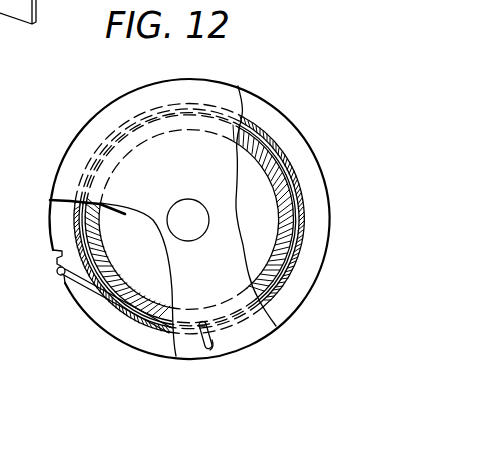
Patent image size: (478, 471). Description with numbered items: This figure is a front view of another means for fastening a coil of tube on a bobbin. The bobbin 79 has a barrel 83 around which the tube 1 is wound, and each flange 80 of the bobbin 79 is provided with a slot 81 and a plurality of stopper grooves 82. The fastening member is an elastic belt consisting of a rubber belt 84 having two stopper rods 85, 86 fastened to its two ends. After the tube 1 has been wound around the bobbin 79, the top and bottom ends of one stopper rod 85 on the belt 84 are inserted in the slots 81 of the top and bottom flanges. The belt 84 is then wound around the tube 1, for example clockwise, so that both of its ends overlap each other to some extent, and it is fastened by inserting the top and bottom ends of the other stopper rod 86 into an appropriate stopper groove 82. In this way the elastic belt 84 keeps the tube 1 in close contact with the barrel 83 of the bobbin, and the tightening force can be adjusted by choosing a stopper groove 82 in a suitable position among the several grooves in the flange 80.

The bobbin 79 is at (305, 137).
The tube 1 is at (292, 196).
The flange 80 is at (320, 228).
The rubber belt 84 is at (292, 259).
The barrel 83 is at (254, 163).
The stopper groove 82 is at (54, 250).
The stopper rod 86 is at (62, 270).
The stopper rod 85 is at (203, 351).
The slot 81 is at (217, 342).